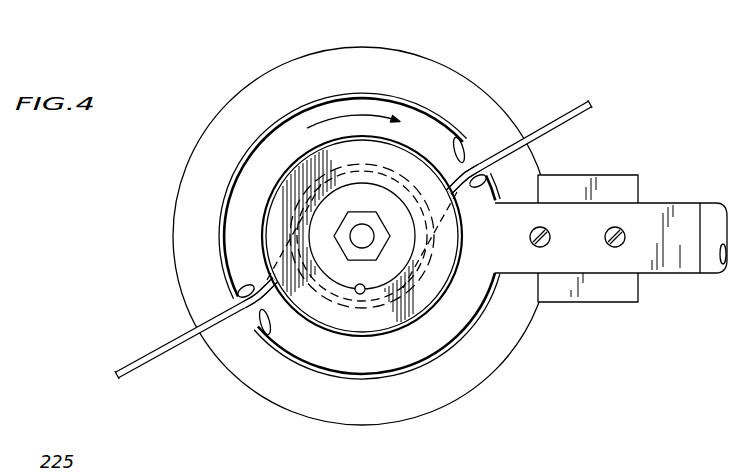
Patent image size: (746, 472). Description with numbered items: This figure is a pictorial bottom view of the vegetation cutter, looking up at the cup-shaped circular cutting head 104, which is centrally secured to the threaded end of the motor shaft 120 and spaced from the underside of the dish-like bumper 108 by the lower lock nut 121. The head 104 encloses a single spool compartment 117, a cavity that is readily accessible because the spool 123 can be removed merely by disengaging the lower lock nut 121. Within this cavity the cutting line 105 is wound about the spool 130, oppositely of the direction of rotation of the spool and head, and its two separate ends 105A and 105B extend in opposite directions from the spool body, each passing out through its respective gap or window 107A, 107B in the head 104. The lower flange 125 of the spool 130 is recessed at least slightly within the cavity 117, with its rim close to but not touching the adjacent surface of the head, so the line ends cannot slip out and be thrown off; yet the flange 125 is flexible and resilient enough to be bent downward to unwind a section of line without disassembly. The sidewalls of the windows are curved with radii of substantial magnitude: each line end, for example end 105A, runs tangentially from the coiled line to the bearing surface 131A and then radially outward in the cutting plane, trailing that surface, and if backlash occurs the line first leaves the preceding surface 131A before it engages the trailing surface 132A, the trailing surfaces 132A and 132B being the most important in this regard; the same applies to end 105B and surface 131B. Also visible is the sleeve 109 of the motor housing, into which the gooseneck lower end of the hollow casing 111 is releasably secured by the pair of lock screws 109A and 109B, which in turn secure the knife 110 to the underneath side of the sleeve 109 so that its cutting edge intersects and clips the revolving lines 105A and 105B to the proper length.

The circular cutting head 104 is at (430, 112).
The cutting line 105 is at (393, 331).
The first cutting line end 105A is at (593, 107).
The second cutting line end 105B is at (135, 363).
The first window 107A is at (500, 130).
The second window 107B is at (258, 312).
The bumper 108 is at (402, 48).
The sleeve 109 is at (608, 303).
The first lock screw 109A is at (545, 247).
The second lock screw 109B is at (620, 247).
The knife 110 is at (688, 265).
The casing 111 is at (705, 200).
The spool compartment 117 is at (277, 180).
The motor shaft 120 is at (363, 226).
The lower lock nut 121 is at (420, 270).
The spool 123 is at (445, 255).
The lower flange 125 is at (377, 249).
The spool 130 is at (361, 294).
The bearing surface 131A is at (489, 183).
The bearing surface 131B is at (237, 281).
The trailing sidewall surface 132A is at (462, 140).
The trailing sidewall surface 132B is at (272, 318).